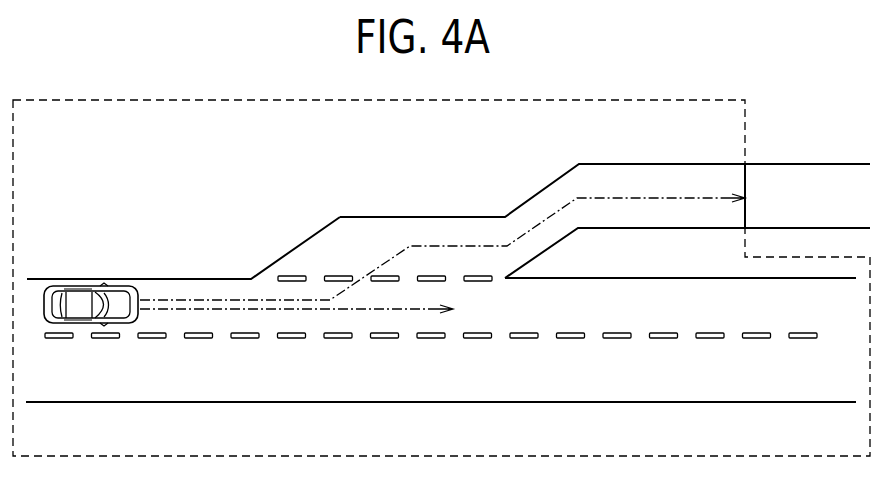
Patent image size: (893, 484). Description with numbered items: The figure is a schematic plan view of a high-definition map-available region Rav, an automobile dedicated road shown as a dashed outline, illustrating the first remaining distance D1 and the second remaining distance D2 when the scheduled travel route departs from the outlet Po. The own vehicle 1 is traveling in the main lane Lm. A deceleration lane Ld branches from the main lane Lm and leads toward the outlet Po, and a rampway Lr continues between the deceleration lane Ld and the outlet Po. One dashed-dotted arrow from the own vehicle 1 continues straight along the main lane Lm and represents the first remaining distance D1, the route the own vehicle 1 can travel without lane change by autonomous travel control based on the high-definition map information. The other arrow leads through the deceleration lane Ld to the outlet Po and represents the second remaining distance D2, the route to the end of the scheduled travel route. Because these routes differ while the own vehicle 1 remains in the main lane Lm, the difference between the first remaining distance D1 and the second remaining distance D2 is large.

The high-definition map-available region Rav is at (140, 100).
The own vehicle 1 is at (91, 287).
The main lane Lm is at (180, 279).
The deceleration lane Ld is at (432, 217).
The rampway Lr is at (652, 228).
The outlet Po is at (745, 164).
The first remaining distance D1 is at (310, 312).
The second remaining distance D2 is at (383, 262).